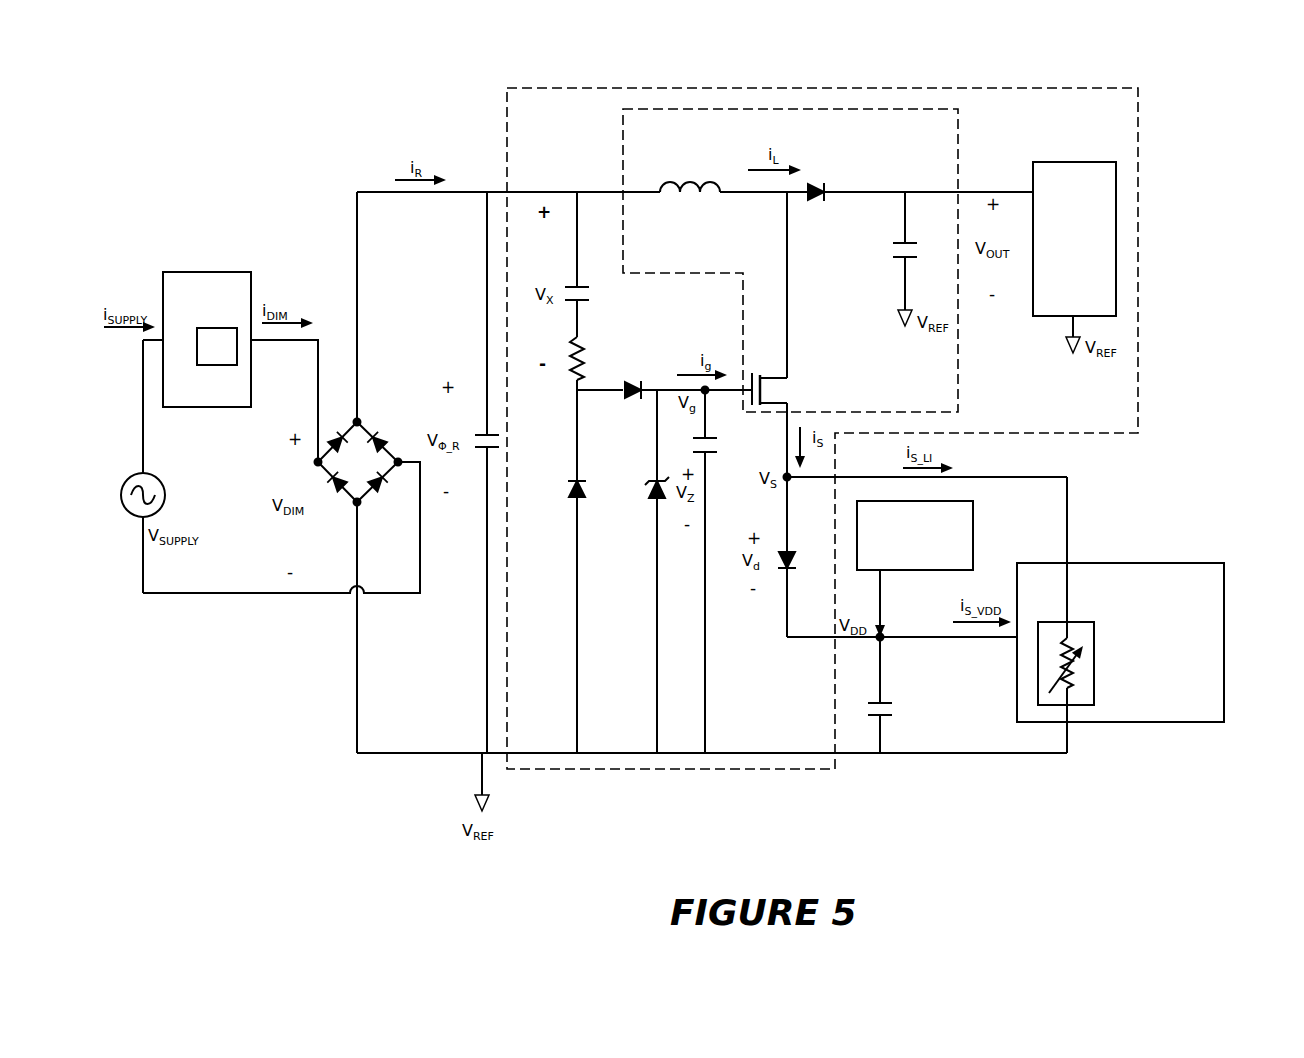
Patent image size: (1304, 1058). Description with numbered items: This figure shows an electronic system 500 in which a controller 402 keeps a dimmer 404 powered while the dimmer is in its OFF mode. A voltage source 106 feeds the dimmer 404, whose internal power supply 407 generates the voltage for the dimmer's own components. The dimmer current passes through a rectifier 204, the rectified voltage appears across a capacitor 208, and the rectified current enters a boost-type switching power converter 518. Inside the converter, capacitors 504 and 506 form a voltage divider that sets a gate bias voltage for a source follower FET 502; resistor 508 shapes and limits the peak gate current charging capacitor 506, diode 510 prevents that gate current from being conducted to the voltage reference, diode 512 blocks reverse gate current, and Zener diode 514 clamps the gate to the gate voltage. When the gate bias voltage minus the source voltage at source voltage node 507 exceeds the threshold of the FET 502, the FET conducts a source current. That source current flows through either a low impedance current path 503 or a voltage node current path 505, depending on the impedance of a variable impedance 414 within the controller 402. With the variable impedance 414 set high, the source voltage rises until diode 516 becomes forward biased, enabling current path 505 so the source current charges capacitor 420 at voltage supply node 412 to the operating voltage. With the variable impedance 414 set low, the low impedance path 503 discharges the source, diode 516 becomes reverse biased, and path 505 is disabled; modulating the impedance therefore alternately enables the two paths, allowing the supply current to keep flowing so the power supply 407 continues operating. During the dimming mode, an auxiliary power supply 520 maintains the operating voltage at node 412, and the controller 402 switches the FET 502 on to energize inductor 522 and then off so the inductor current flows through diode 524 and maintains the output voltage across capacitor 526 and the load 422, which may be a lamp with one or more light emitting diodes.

The electronic system 500 is at (1218, 130).
The dimmer 404 is at (207, 339).
The internal power supply 407 is at (214, 366).
The voltage source 106 is at (167, 497).
The full bridge rectifier 204 is at (358, 462).
The capacitor 208 is at (500, 447).
The capacitor 504 is at (568, 287).
The resistor 508 is at (580, 352).
The diode 510 is at (565, 495).
The diode 512 is at (627, 386).
The Zener diode 514 is at (647, 496).
The capacitor 506 is at (712, 458).
The source voltage node 507 is at (784, 470).
The source follower FET 502 is at (762, 378).
The boost-type switching power converter 518 is at (621, 162).
The inductor 522 is at (683, 186).
The diode 524 is at (810, 188).
The capacitor 526 is at (898, 258).
The load 422 is at (1074, 239).
The diode 516 is at (784, 571).
The voltage node current path 505 is at (806, 639).
The low impedance current path 503 is at (1069, 516).
The auxiliary power supply 520 is at (975, 543).
The voltage supply node 412 is at (884, 640).
The capacitor 420 is at (890, 715).
The controller 402 is at (1120, 642).
The variable impedance 414 is at (1095, 683).